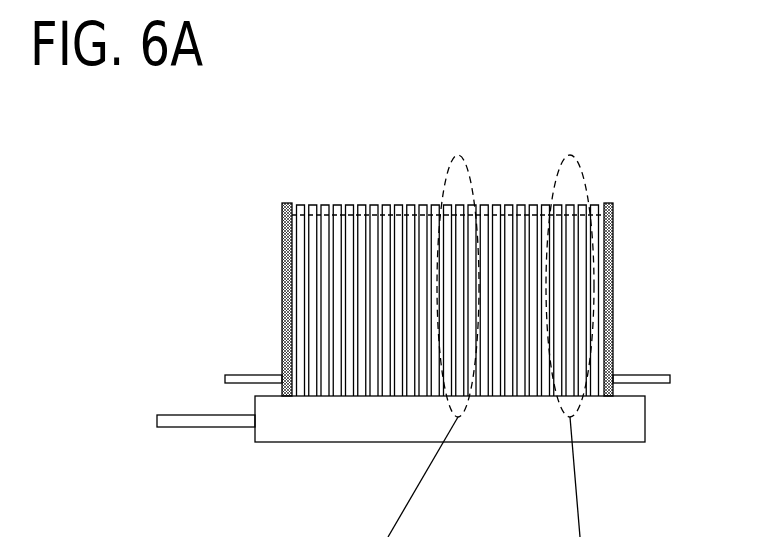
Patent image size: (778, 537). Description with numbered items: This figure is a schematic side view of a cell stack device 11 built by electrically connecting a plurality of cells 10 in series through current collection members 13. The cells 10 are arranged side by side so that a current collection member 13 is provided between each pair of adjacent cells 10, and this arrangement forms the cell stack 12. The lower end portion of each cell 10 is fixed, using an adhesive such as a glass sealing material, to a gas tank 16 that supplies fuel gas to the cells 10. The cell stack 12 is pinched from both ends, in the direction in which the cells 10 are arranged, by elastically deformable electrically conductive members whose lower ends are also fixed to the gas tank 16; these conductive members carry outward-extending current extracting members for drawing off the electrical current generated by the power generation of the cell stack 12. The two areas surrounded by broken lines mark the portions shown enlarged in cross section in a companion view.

The cell 10 is at (507, 210).
The cell stack device 11 is at (299, 90).
The cell stack 12 is at (277, 188).
The current collection member 13 is at (392, 225).
The gas tank 16 is at (645, 427).